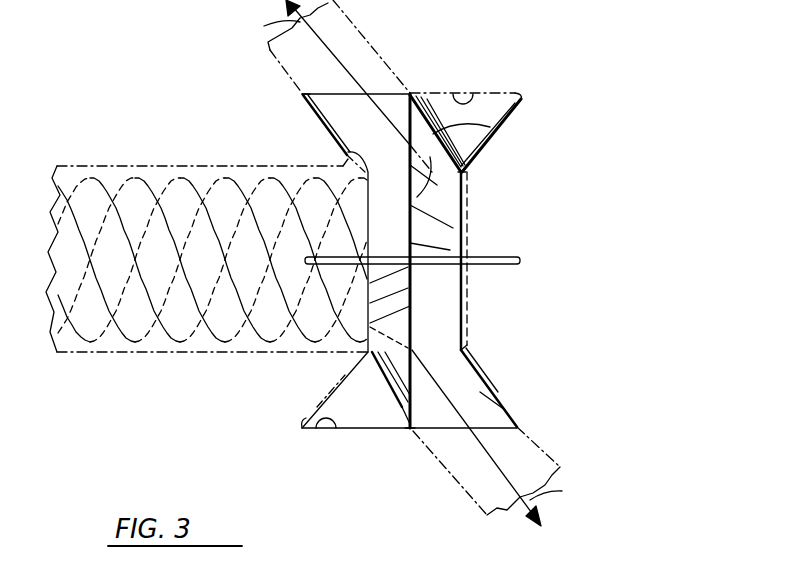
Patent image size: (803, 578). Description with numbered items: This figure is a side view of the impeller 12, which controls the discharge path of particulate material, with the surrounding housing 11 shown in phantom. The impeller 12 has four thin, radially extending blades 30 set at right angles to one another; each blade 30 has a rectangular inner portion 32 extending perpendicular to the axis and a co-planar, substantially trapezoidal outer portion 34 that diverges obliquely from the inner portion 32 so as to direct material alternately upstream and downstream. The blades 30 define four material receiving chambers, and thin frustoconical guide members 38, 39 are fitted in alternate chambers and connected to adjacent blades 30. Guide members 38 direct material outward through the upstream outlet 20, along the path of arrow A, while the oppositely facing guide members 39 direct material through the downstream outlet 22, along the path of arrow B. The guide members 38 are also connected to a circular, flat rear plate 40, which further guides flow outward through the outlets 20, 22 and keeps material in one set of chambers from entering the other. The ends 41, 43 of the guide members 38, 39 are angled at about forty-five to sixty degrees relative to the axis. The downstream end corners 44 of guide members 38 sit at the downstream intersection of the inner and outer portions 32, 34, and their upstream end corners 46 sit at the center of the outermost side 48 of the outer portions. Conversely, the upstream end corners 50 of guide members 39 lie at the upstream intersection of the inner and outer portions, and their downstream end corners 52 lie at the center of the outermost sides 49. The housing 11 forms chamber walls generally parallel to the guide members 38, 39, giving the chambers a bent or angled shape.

The housing 11 is at (524, 111).
The impeller 12 is at (466, 144).
The upstream outlet 20 is at (336, 97).
The downstream outlet 22 is at (500, 437).
The blade 30 is at (348, 118).
The inner portion 32 is at (468, 334).
The outer portion 34 is at (473, 403).
The guide member 38 is at (415, 190).
The guide member 39 is at (384, 386).
The rear plate 40 is at (440, 314).
The end 41 is at (490, 127).
The end 43 is at (398, 412).
The downstream end corner 44 is at (467, 173).
The upstream end corner 46 is at (412, 93).
The outermost side 48 is at (482, 95).
The outermost side 49 is at (318, 415).
The upstream end corner 50 is at (368, 312).
The downstream end corner 52 is at (412, 430).